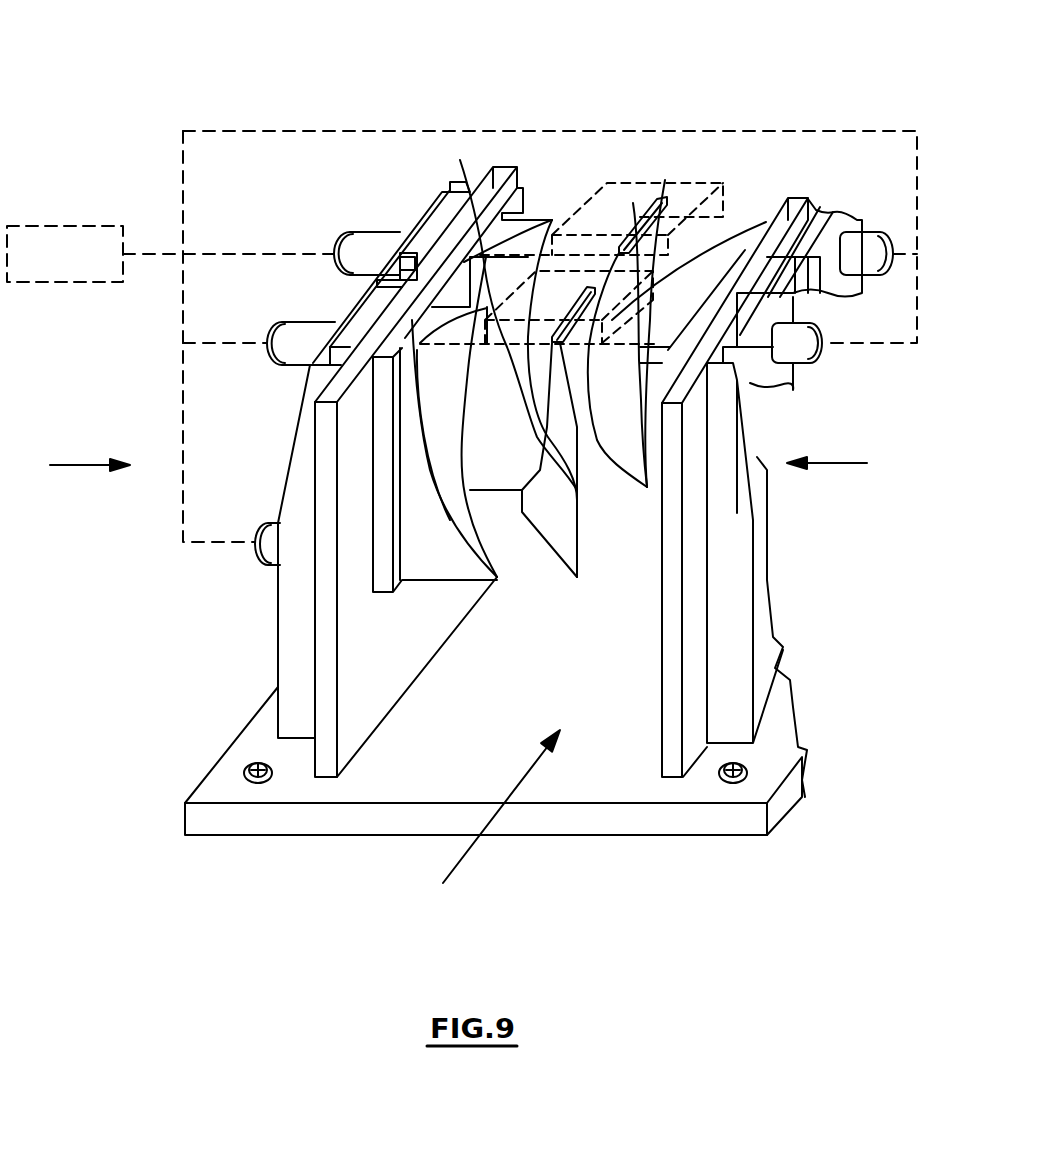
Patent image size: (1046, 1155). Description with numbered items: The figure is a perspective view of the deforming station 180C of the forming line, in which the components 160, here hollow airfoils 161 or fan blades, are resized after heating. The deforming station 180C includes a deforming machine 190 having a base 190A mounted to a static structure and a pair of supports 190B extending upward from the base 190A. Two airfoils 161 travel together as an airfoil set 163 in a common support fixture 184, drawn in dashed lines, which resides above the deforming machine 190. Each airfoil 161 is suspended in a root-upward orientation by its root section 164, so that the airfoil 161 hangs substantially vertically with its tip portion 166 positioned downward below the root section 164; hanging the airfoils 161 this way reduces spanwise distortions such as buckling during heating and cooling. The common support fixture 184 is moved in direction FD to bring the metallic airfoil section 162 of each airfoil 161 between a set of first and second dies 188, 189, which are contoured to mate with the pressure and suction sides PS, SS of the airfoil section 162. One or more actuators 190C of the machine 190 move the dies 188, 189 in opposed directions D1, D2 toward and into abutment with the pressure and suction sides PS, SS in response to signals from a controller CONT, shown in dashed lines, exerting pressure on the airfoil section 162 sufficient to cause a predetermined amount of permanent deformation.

The deforming station 180C is at (169, 72).
The airfoil set 163 is at (661, 108).
The deforming machine 190 is at (489, 158).
The base 190A is at (328, 822).
The supports 190B is at (490, 165).
The actuators 190C is at (373, 232).
The common support fixture 184 is at (466, 172).
The first die 188 is at (505, 229).
The second die 189 is at (747, 237).
The airfoil section 162 is at (617, 307).
The component 160 is at (638, 250).
The root section 164 is at (518, 368).
The airfoil 161 is at (560, 530).
The tip portion 166 is at (620, 463).
The pressure side PS is at (570, 363).
The suction side SS is at (563, 460).
The first direction D1 is at (78, 464).
The second direction D2 is at (824, 463).
The fixture direction FD is at (466, 859).
The controller CONT is at (170, 254).